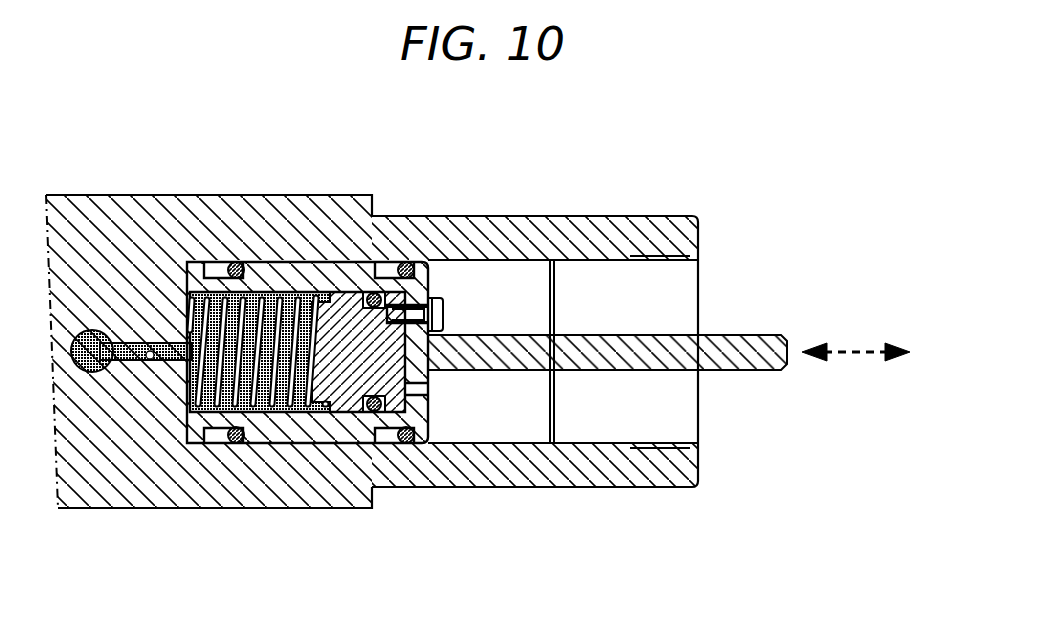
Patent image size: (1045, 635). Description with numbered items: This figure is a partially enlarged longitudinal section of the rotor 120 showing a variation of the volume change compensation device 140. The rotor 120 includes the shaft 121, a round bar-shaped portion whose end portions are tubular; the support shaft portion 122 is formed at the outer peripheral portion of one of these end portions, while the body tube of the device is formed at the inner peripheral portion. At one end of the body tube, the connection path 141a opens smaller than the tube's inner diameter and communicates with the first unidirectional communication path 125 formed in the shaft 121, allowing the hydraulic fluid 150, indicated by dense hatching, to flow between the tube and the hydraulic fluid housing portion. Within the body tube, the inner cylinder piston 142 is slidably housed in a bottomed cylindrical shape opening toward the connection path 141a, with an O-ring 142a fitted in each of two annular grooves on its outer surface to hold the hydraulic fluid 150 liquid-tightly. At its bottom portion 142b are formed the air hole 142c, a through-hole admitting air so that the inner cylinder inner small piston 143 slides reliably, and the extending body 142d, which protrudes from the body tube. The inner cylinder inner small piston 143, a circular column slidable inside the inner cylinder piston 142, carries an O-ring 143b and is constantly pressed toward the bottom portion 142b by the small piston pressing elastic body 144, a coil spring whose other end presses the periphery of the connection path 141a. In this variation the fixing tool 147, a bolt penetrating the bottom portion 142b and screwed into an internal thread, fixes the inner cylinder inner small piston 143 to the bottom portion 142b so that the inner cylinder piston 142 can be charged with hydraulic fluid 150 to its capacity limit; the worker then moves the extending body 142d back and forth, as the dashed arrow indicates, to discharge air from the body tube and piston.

The rotor 120 is at (475, 320).
The shaft 121 is at (152, 195).
The support shaft portion 122 is at (553, 216).
The first unidirectional communication path 125 is at (93, 372).
The volume change compensation device 140 is at (483, 340).
The connection path 141a is at (151, 359).
The inner cylinder piston 142 is at (349, 340).
The O-ring 142a is at (232, 443).
The bottom portion 142b is at (390, 443).
The air hole 142c is at (421, 392).
The extending body 142d is at (764, 335).
The inner cylinder inner small piston 143 is at (358, 357).
The piston seal ring 143b is at (368, 412).
The small piston pressing elastic body 144 is at (289, 298).
The fixing tool 147 is at (443, 315).
The hydraulic fluid 150 is at (131, 464).